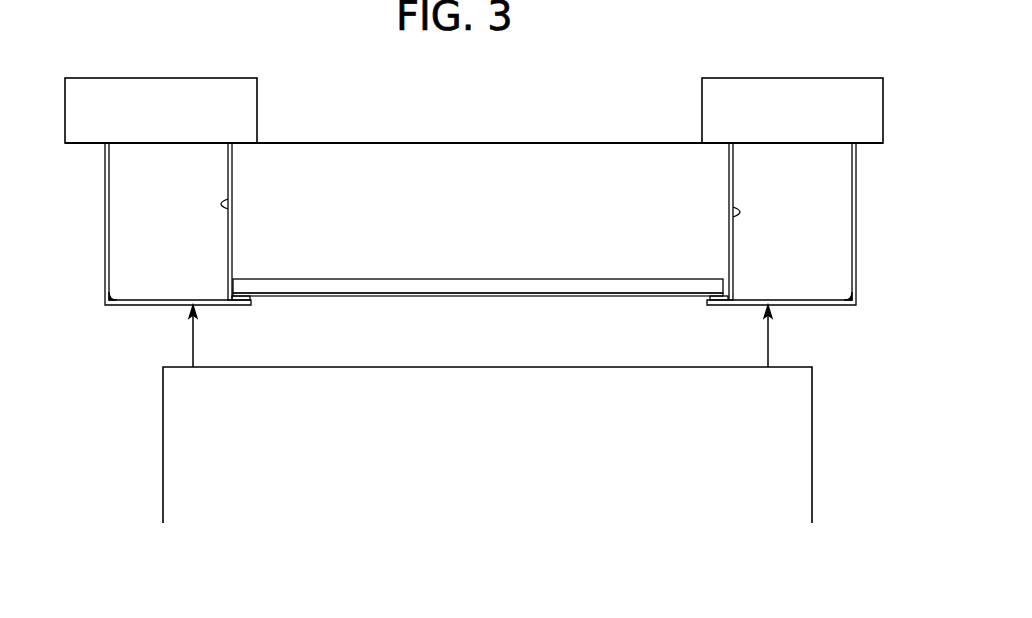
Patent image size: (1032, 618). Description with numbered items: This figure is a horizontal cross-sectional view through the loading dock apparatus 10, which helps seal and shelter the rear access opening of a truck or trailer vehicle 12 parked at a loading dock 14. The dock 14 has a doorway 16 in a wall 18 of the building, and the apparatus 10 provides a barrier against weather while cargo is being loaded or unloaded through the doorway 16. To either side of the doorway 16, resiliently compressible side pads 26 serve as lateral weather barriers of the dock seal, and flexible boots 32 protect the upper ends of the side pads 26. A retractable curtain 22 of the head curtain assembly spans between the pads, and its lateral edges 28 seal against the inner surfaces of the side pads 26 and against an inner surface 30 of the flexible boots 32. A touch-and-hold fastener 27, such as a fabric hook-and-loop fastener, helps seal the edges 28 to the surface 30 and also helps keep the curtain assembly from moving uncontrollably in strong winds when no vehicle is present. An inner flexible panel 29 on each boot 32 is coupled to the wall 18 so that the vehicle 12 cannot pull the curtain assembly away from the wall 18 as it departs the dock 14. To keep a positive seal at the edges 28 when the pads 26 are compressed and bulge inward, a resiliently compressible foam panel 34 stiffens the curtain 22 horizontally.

The loading dock apparatus 10 is at (126, 359).
The truck/trailer vehicle 12 is at (812, 418).
The loading dock 14 is at (481, 340).
The doorway 16 is at (702, 100).
The wall 18 is at (80, 144).
The retractable curtain 22 is at (410, 297).
The side pads 26 is at (232, 172).
The touch-and-hold fastener 27 is at (252, 298).
The lateral edges 28 is at (228, 297).
The inner flexible panel 29 is at (232, 210).
The inner surface 30 is at (238, 296).
The flexible boots 32 is at (105, 237).
The foam panel 34 is at (337, 279).